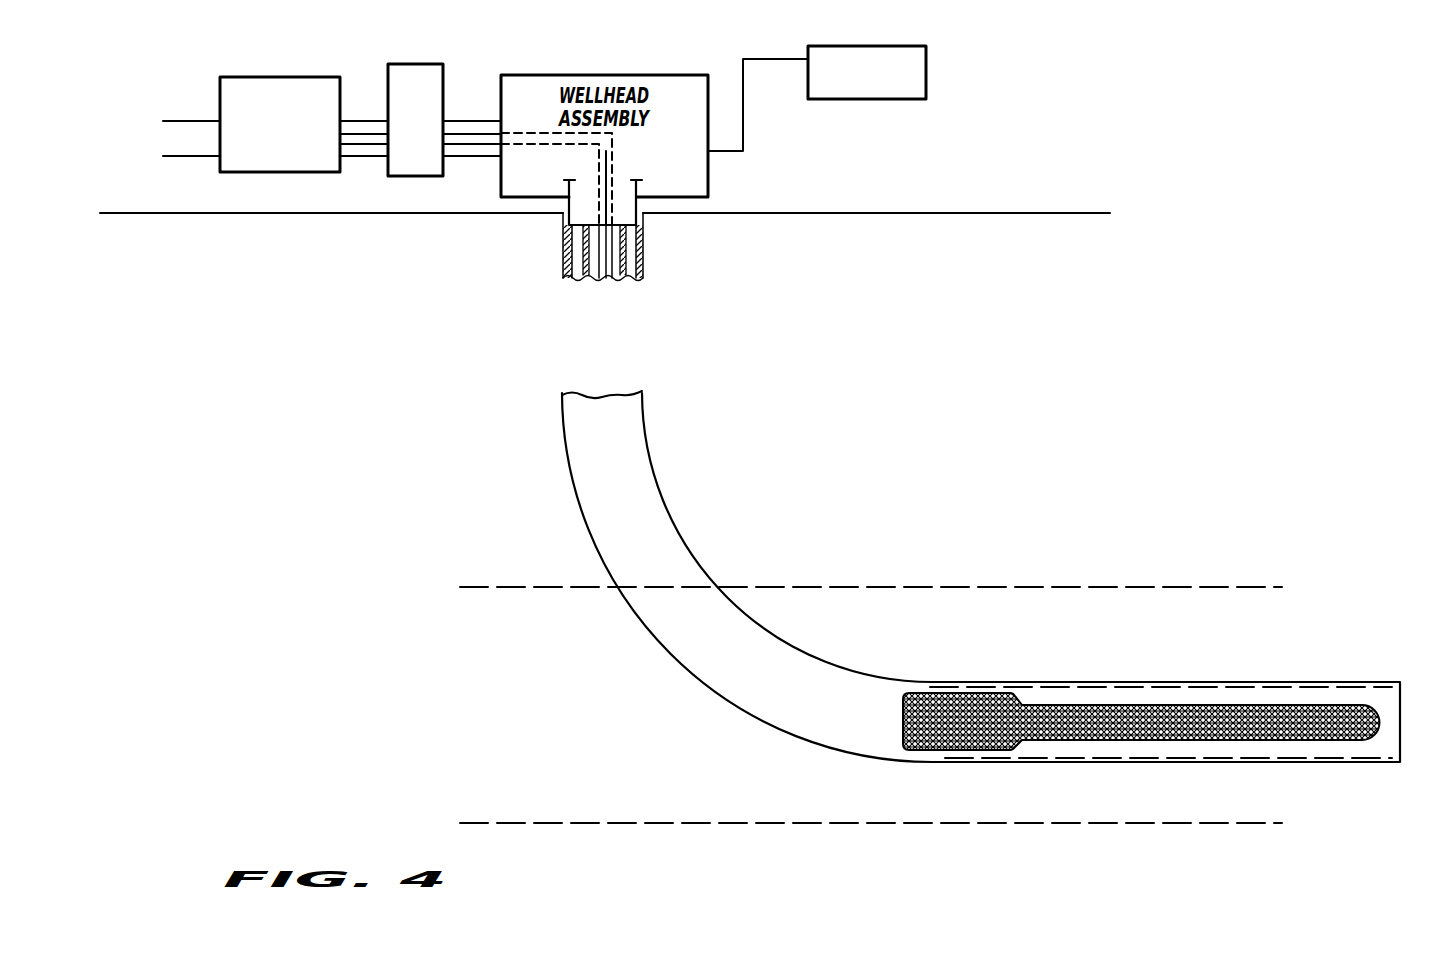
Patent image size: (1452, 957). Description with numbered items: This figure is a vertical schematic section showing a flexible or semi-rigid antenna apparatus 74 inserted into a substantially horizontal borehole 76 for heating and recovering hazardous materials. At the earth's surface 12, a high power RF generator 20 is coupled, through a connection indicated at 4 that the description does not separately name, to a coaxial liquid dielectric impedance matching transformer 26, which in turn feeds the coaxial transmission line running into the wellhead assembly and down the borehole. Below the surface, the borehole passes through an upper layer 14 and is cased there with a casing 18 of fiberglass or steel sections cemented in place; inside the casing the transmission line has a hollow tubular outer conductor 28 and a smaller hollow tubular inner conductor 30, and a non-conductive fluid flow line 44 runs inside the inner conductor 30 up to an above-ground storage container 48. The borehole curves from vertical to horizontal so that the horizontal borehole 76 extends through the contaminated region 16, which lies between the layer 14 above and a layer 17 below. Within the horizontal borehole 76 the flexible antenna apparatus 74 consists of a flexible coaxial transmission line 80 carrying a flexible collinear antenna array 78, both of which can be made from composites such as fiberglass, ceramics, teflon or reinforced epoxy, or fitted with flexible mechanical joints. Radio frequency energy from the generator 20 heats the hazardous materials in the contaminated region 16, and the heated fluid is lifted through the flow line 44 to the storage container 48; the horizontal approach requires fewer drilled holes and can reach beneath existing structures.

The electrical cable 4 is at (357, 106).
The earth's surface 12 is at (790, 208).
The layer 14 is at (410, 354).
The contaminated region 16 is at (495, 699).
The layer 17 is at (965, 859).
The casing 18 is at (649, 262).
The high power RF generator 20 is at (264, 133).
The coaxial liquid dielectric impedance matching transformer 26 is at (428, 133).
The outer conductor 28 is at (633, 242).
The inner conductor 30 is at (592, 256).
The fluid flow line 44 is at (598, 242).
The storage container 48 is at (853, 85).
The flexible antenna apparatus 74 is at (862, 580).
The horizontal borehole 76 is at (795, 688).
The flexible collinear antenna array 78 is at (1060, 745).
The flexible coaxial transmission line 80 is at (712, 578).